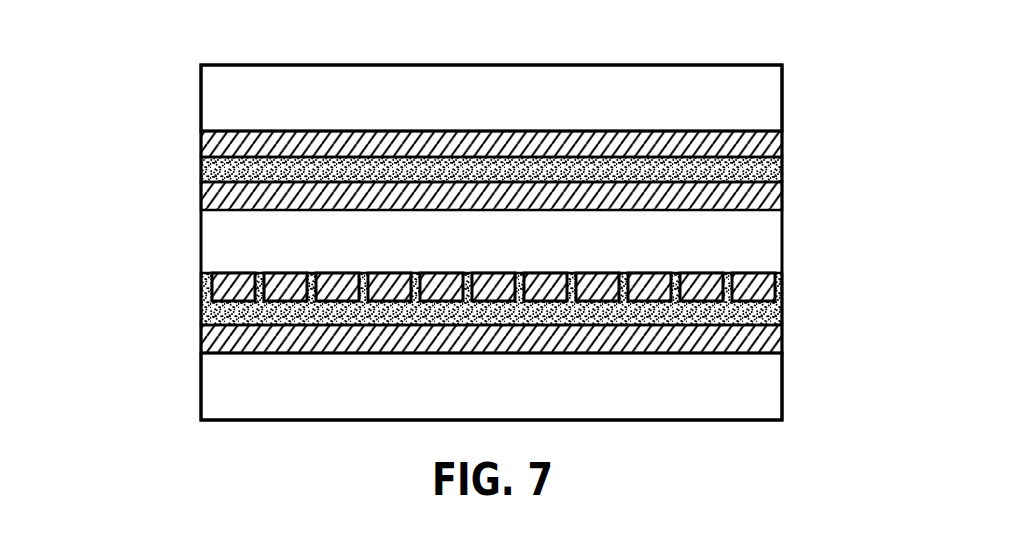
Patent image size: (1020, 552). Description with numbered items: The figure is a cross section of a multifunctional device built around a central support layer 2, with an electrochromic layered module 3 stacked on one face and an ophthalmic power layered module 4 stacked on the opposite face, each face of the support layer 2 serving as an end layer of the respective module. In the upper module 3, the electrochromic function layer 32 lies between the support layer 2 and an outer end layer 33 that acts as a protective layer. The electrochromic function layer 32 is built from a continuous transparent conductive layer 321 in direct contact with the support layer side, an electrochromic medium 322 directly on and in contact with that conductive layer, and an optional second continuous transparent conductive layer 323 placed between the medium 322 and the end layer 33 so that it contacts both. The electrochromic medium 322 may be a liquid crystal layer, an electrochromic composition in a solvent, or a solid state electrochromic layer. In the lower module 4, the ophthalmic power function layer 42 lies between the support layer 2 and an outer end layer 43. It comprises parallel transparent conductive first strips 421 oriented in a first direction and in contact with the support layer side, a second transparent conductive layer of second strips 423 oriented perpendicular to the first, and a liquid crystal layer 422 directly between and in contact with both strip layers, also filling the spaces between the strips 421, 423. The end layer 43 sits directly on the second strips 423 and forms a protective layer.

The support layer 2 is at (783, 248).
The electrochromic layered module 3 is at (443, 143).
The ophthalmic power layered module 4 is at (443, 344).
The end layer 33 is at (201, 78).
The electrochromic function layer 32 is at (413, 168).
The second continuous transparent conductive layer 323 is at (201, 150).
The electrochromic medium 322 is at (201, 172).
The continuous transparent conductive layer 321 is at (441, 200).
The ophthalmic power function layer 42 is at (413, 314).
The transparent conductive first strips 421 is at (225, 297).
The liquid crystal layer 422 is at (201, 312).
The transparent conductive second strips 423 is at (441, 344).
The end layer 43 is at (201, 403).